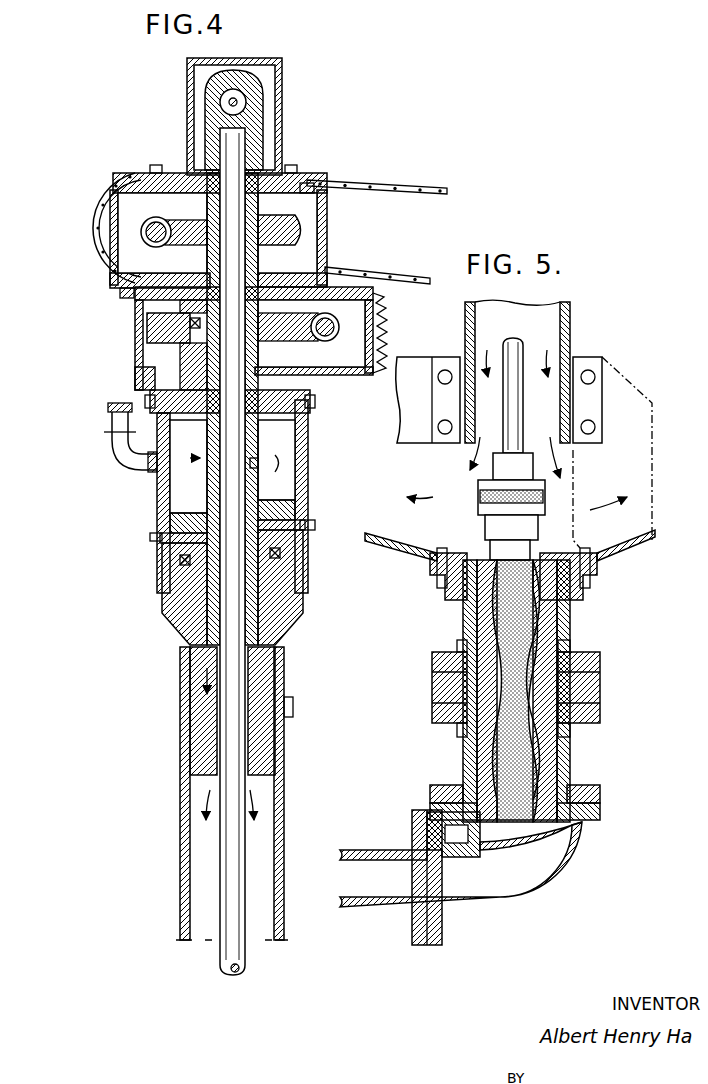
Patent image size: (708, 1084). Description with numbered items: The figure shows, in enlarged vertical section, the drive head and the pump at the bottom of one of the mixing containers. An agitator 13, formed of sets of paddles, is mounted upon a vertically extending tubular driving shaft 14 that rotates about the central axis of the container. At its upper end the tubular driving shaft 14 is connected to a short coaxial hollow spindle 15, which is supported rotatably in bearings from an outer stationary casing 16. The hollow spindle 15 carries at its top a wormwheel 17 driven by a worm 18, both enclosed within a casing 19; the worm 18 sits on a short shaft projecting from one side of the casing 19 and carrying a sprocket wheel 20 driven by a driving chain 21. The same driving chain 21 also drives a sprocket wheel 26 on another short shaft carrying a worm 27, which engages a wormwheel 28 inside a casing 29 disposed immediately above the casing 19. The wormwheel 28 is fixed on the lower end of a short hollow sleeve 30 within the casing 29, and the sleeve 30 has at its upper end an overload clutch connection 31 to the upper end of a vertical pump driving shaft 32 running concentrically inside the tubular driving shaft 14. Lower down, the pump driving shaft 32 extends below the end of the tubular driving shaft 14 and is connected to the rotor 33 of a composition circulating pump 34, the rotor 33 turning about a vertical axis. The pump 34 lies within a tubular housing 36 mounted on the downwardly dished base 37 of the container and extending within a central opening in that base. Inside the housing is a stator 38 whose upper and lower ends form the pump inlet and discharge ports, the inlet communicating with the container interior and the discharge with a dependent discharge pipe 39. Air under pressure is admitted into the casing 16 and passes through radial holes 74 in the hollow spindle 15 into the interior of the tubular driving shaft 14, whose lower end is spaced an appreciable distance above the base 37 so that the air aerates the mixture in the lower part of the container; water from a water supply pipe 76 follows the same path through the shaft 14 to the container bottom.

In FIG. 5, the agitator 13 is at (419, 440).
In FIG. 4, the tubular driving shaft 14 is at (183, 803).
In FIG. 5, the tubular driving shaft 14 is at (562, 333).
In FIG. 4, the hollow spindle 15 is at (255, 500).
In FIG. 4, the outer stationary casing 16 is at (307, 445).
In FIG. 4, the wormwheel 17 is at (155, 328).
In FIG. 4, the worm 18 is at (334, 327).
In FIG. 4, the casing 19 is at (369, 373).
In FIG. 4, the sprocket wheel 20 is at (382, 312).
In FIG. 4, the driving chain 21 is at (396, 195).
In FIG. 4, the sprocket wheel 26 is at (104, 229).
In FIG. 4, the worm 27 is at (154, 233).
In FIG. 4, the wormwheel 28 is at (285, 228).
In FIG. 4, the casing 29 is at (323, 213).
In FIG. 4, the hollow sleeve 30 is at (240, 101).
In FIG. 4, the overload clutch connection 31 is at (233, 102).
In FIG. 4, the pump driving shaft 32 is at (230, 494).
In FIG. 5, the pump driving shaft 32 is at (512, 345).
In FIG. 5, the rotor 33 is at (510, 618).
In FIG. 5, the composition circulating pump 34 is at (440, 725).
In FIG. 5, the tubular housing 36 is at (568, 750).
In FIG. 5, the dished base 37 is at (621, 557).
In FIG. 5, the stator 38 is at (545, 627).
In FIG. 5, the discharge pipe 39 is at (473, 885).
In FIG. 4, the radial holes 74 is at (258, 468).
In FIG. 4, the water supply pipe 76 is at (138, 462).